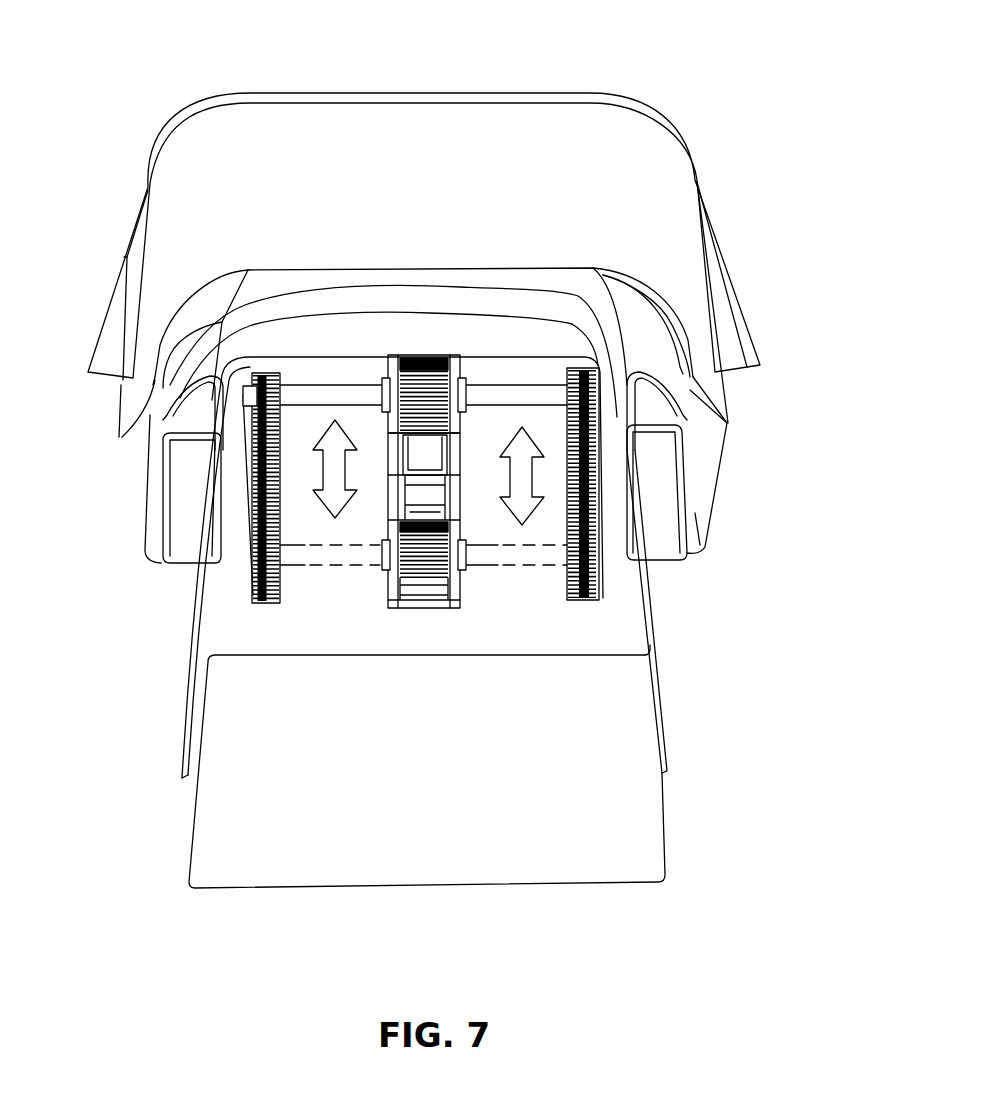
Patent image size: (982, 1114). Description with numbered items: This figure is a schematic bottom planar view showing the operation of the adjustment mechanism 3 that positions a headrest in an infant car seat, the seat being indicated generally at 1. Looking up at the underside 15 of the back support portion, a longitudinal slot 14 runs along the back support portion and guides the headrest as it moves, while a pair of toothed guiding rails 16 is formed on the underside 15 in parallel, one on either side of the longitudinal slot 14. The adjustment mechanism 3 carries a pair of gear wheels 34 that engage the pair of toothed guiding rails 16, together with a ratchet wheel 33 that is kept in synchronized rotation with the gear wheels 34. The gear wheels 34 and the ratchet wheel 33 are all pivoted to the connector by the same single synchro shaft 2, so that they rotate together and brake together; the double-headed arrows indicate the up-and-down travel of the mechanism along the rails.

The cover / outer housing 1 is at (690, 123).
The synchro shaft 2 is at (302, 398).
The adjustment mechanism 3 is at (452, 332).
The longitudinal slot 14 is at (413, 607).
The underside 15 is at (560, 335).
The toothed guiding rails 16 is at (597, 503).
The ratchet wheel 33 is at (423, 360).
The gear wheels 34 is at (603, 388).